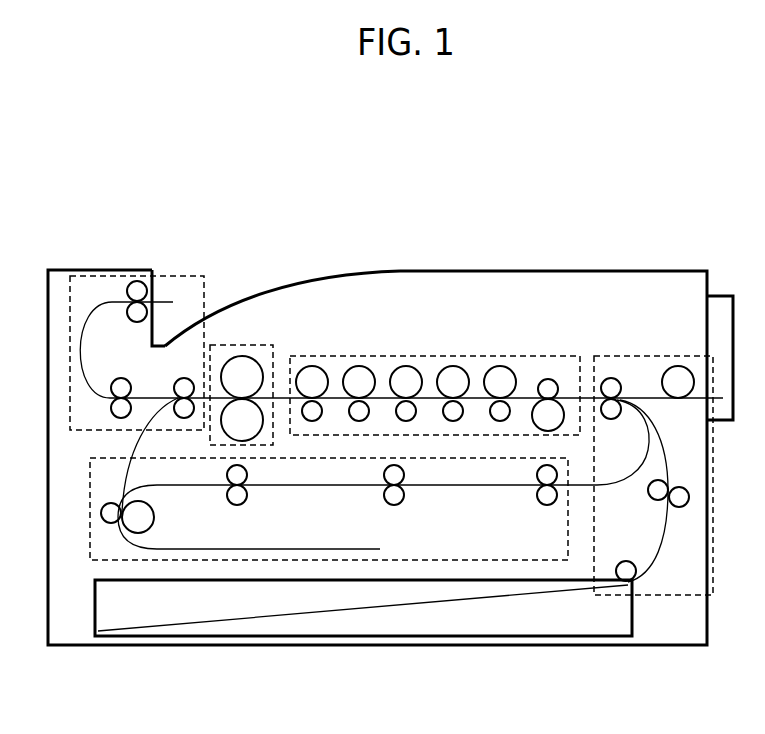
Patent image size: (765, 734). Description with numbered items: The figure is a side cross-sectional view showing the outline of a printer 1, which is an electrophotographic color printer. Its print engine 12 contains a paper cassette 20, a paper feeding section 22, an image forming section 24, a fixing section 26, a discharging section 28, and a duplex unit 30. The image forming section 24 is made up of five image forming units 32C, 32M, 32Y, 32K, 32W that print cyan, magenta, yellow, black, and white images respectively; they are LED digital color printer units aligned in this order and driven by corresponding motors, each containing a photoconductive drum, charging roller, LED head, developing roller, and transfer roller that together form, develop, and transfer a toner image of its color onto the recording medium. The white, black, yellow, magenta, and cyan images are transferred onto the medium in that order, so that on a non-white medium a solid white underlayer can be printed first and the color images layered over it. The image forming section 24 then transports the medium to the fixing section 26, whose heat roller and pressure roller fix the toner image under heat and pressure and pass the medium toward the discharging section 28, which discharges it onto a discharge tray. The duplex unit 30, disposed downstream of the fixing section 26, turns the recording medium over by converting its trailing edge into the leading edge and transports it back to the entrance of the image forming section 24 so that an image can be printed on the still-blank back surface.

The printer 1 is at (108, 176).
The print engine 12 is at (581, 271).
The paper cassette 20 is at (95, 605).
The paper feeding section 22 is at (673, 596).
The image forming section 24 is at (301, 356).
The fixing section 26 is at (230, 345).
The discharging section 28 is at (70, 361).
The duplex unit 30 is at (90, 489).
The image forming unit 32C is at (311, 366).
The image forming unit 32M is at (359, 366).
The image forming unit 32Y is at (406, 366).
The image forming unit 32K is at (453, 366).
The image forming unit 32W is at (500, 366).